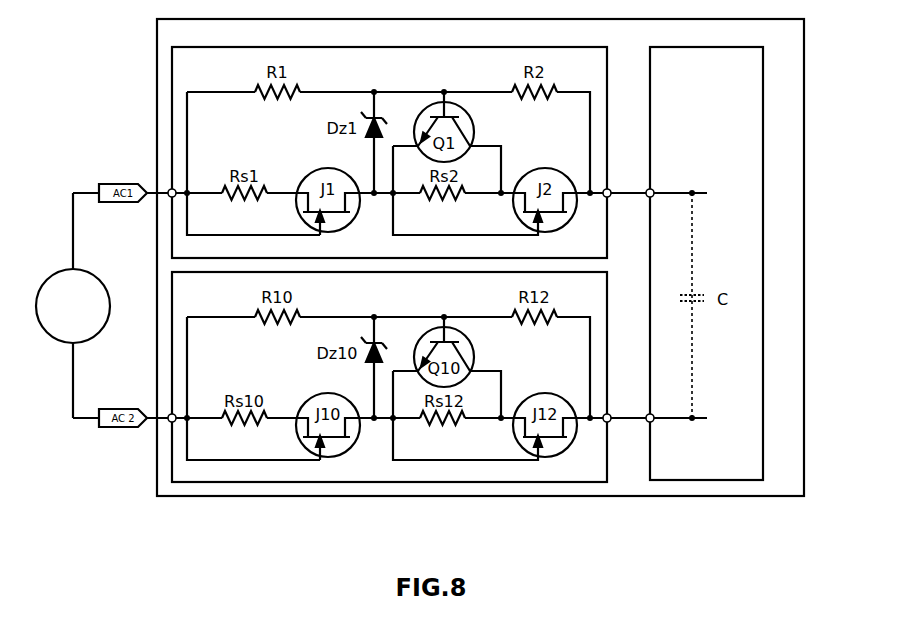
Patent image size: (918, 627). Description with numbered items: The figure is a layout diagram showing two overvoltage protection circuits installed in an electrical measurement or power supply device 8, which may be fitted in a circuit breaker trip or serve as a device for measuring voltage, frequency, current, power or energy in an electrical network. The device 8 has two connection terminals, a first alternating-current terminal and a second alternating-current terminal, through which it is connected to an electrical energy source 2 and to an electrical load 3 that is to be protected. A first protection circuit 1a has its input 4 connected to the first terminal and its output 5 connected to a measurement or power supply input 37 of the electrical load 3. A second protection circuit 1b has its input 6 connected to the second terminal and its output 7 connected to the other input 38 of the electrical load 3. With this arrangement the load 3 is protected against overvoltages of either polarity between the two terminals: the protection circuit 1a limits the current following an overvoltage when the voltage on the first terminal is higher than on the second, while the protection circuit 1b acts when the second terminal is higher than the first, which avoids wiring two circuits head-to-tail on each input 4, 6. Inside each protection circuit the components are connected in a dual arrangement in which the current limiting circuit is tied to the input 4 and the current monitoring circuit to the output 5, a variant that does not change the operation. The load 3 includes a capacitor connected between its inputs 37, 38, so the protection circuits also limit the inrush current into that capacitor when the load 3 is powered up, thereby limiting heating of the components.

The protection circuit 1a is at (213, 80).
The second protection circuit 1b is at (217, 468).
The electrical energy source 2 is at (65, 290).
The electrical load 3 is at (734, 116).
The input 4 is at (170, 192).
The output 5 is at (608, 192).
The input 6 is at (170, 420).
The output 7 is at (608, 421).
The electrical measurement or power supply device 8 is at (777, 213).
The measurement or power supply input 37 is at (651, 195).
The input 38 is at (651, 417).